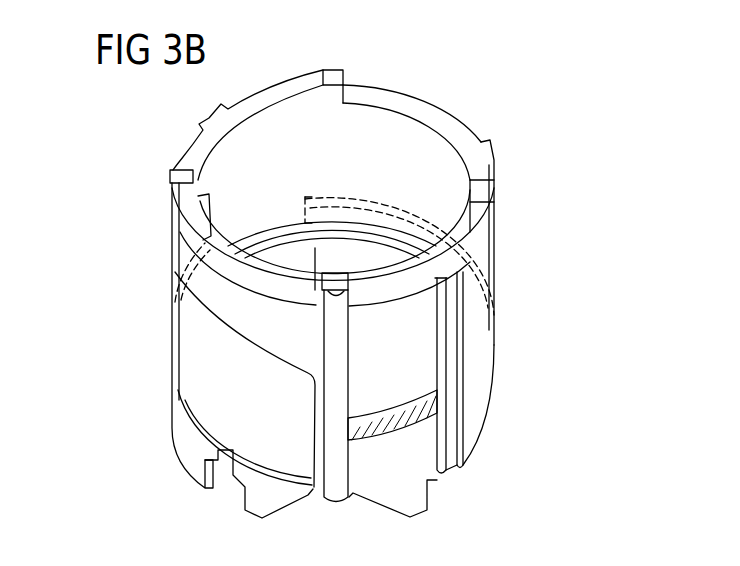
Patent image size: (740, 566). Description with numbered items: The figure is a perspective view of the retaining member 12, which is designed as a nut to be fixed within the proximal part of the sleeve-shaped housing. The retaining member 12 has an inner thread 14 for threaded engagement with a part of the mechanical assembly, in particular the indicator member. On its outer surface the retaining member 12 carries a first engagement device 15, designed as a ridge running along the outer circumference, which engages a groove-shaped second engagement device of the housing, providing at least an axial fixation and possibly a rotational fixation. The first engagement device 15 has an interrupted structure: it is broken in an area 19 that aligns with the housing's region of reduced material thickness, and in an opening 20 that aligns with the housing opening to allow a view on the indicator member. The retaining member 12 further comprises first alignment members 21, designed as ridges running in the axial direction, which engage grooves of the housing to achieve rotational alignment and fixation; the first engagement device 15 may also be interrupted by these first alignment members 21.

The retaining member 12 is at (523, 214).
The inner thread 14 is at (278, 250).
The first engagement device 15 is at (347, 197).
The area 19 is at (237, 233).
The opening 20 is at (207, 373).
The first alignment member 21 is at (483, 143).